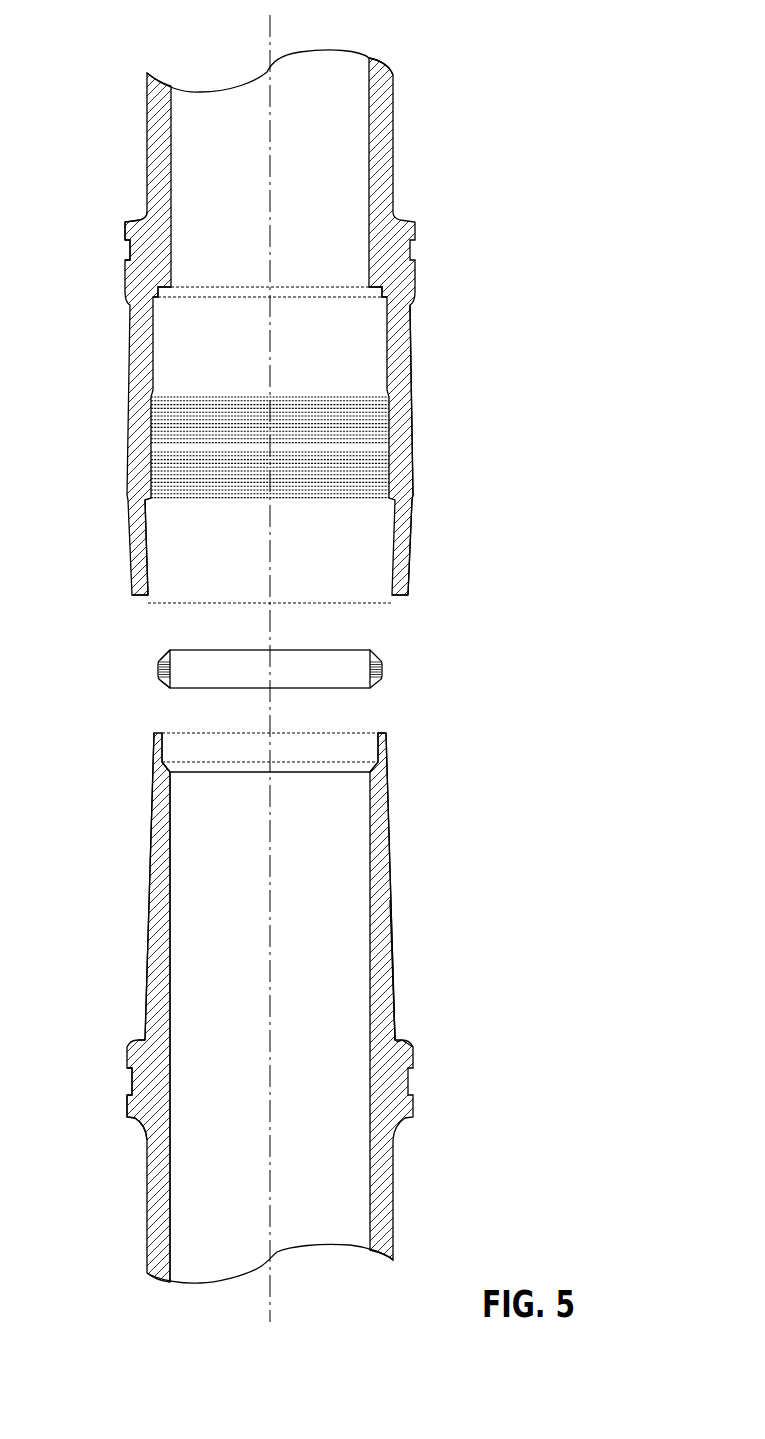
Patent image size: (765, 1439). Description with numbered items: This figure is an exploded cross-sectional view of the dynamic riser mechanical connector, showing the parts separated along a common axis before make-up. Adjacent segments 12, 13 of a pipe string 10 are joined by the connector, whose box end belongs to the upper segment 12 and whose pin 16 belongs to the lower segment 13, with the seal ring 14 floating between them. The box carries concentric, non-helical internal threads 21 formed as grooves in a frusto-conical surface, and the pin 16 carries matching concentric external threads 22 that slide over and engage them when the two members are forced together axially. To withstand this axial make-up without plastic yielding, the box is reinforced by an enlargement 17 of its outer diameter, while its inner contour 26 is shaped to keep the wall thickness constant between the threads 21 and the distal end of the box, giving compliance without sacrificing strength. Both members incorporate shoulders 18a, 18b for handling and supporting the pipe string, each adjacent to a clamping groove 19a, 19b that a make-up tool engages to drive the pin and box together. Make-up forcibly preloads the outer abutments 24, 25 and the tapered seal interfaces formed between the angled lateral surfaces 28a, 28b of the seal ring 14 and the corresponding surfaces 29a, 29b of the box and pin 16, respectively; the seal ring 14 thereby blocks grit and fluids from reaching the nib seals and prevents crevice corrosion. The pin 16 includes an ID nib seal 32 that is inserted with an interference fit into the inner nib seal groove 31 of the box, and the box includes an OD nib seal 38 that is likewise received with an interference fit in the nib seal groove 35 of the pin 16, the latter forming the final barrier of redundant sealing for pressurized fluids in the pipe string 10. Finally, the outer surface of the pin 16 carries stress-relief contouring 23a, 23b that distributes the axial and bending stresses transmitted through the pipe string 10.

The pipe string 10 is at (270, 668).
The pipe string segment 12 is at (292, 330).
The pipe string segment 13 is at (289, 1007).
The seal ring 14 is at (304, 666).
The pin 16 is at (200, 1027).
The enlargement 17 is at (439, 450).
The shoulder 18a is at (106, 219).
The shoulder 18b is at (109, 1118).
The clamping groove 19a is at (94, 250).
The clamping groove 19b is at (97, 1082).
The internal threads 21 is at (293, 447).
The external threads 22 is at (413, 886).
The stress-relief contouring 23a is at (124, 886).
The stress-relief contouring 23b is at (422, 970).
The outer abutment 24 is at (420, 1030).
The outer abutment 25 is at (120, 610).
The contour 26 is at (166, 546).
The lateral surface 28a is at (131, 649).
The lateral surface 28b is at (130, 693).
The tapered abutment seal surface 29a is at (184, 308).
The tapered abutment seal surface 29b is at (196, 743).
The inner nib seal groove 31 is at (363, 309).
The ID nib seal 32 is at (406, 724).
The inner nib seal groove 35 is at (277, 821).
The OD nib seal 38 is at (345, 744).